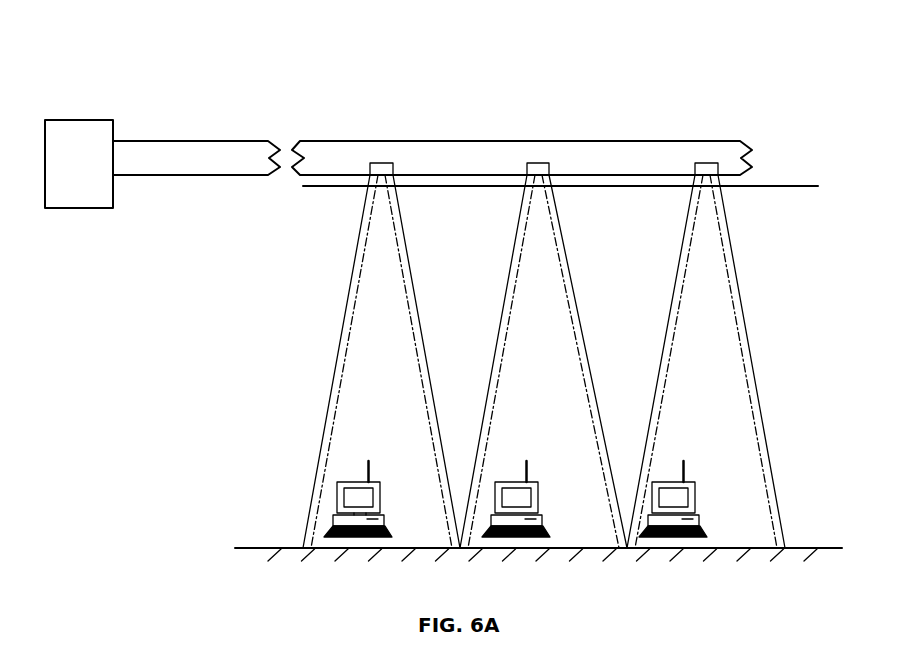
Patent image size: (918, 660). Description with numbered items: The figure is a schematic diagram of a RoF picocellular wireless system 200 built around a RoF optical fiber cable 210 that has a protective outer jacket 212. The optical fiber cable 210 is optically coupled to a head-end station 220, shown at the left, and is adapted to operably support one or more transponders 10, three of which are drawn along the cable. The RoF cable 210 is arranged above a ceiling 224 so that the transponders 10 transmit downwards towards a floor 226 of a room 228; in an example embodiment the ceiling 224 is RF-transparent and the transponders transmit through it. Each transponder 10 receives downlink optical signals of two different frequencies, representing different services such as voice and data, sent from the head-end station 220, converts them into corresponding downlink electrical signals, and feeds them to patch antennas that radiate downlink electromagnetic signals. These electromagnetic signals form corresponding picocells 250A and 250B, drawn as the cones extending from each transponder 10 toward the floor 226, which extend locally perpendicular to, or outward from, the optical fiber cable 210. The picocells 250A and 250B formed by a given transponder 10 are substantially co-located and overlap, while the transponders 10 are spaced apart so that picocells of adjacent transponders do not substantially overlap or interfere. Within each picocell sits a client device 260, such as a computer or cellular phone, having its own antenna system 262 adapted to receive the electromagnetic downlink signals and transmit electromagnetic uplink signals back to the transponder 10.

The RoF picocellular wireless system 200 is at (202, 77).
The RoF optical fiber cable 210 is at (226, 141).
The head-end station 220 is at (98, 174).
The protective outer jacket 212 is at (705, 141).
The ceiling 224 is at (762, 187).
The transponder 10 is at (706, 163).
The picocell 250A is at (348, 296).
The picocell 250B is at (366, 250).
The room 228 is at (813, 317).
The floor 226 is at (258, 547).
The client device 260 is at (380, 496).
The antenna system 262 is at (370, 464).